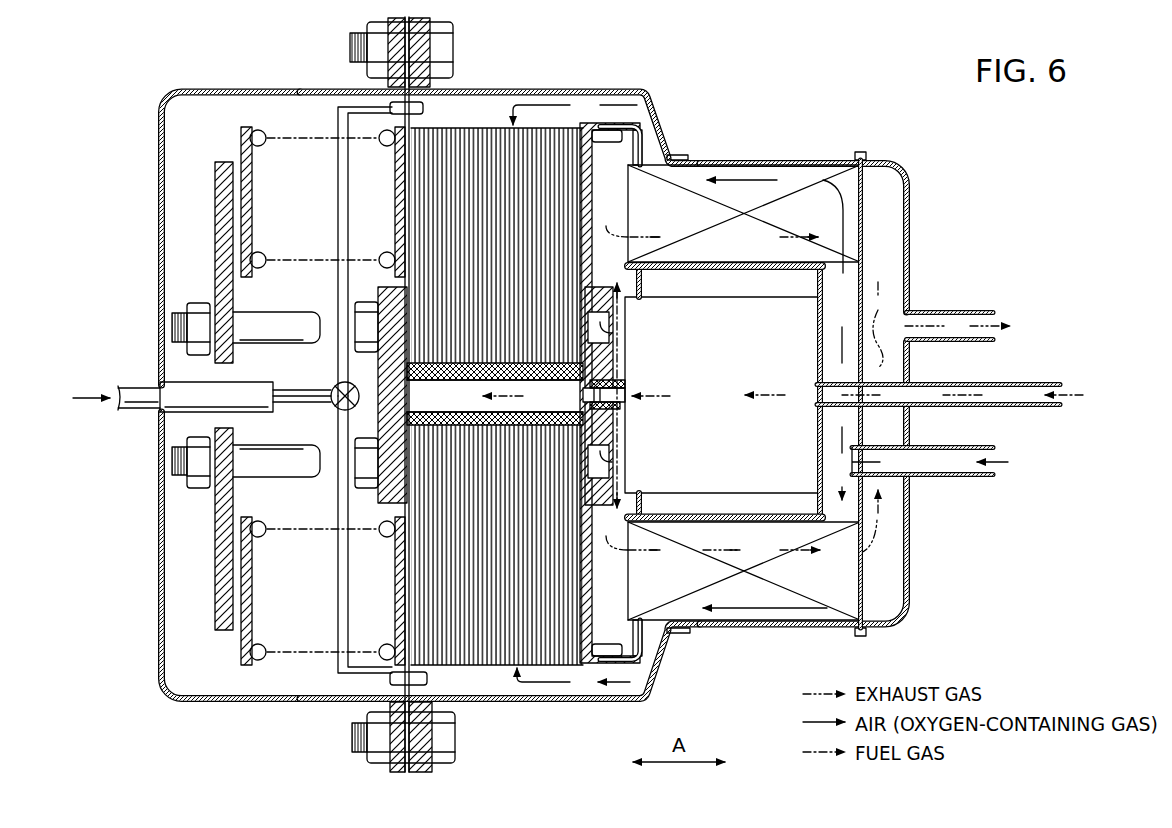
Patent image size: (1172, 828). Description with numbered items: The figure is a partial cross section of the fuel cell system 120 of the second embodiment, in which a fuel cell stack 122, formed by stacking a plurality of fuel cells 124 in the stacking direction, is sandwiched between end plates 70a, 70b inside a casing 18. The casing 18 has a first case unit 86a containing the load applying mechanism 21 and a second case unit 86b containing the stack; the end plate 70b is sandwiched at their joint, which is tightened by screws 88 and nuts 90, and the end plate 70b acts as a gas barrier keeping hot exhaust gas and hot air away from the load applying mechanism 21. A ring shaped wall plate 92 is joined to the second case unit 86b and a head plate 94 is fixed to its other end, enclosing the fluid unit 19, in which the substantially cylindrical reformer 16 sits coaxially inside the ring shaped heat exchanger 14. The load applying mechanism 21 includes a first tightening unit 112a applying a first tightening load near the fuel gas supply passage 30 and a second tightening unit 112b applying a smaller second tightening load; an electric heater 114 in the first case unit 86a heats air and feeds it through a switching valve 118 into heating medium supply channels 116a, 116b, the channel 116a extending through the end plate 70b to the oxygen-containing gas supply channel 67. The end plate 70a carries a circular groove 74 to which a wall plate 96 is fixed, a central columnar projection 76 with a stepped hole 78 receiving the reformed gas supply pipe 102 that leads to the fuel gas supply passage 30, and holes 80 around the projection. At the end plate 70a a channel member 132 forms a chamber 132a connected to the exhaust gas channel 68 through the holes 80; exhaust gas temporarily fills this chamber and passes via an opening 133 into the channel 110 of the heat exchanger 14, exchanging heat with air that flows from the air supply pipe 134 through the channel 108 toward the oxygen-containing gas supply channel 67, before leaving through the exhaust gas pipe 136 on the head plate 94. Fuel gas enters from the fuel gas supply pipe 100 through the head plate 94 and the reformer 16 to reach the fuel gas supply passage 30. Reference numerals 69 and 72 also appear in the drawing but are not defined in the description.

The fuel cell system 120 is at (1001, 130).
The first case unit 86a is at (243, 89).
The second case unit 86b is at (524, 88).
The casing 18 is at (688, 142).
The wall plate 92 is at (732, 630).
The screws 88 is at (435, 43).
The nuts 90 is at (368, 49).
The end plate 70b is at (394, 230).
The heating medium supply channel 116a is at (338, 200).
The heating medium supply channel 116b is at (338, 623).
The load applying mechanism 21 is at (96, 578).
The second tightening unit 112b is at (212, 565).
The first tightening unit 112a is at (377, 505).
The electric heater 114 is at (252, 398).
The switching valve 118 is at (334, 385).
The fuel gas supply passage 30 is at (379, 422).
The fuel cells 124 is at (460, 128).
The fuel gas supply passage 69 is at (413, 405).
The end plate 70a is at (588, 198).
The wall plate 96 is at (650, 140).
The lower partition wall 72 is at (660, 688).
The channel member 132 is at (640, 120).
The chamber 132a is at (670, 656).
The exhaust gas channel 68 is at (550, 331).
The holes 80 is at (600, 463).
The reformed gas supply pipe 102 is at (628, 392).
The columnar projection 76 is at (614, 409).
The stepped hole 78 is at (618, 420).
The fluid unit 19 is at (733, 189).
The reformer 16 is at (748, 305).
The heat exchanger 14 is at (845, 187).
The channel 110 is at (700, 562).
The channel 108 is at (843, 596).
The opening 133 is at (625, 598).
The head plate 94 is at (911, 550).
The exhaust gas pipe 136 is at (953, 311).
The fuel gas supply pipe 100 is at (1030, 382).
The air supply pipe 134 is at (962, 480).
The fuel cell stack 122 is at (545, 113).
The circular groove 74 is at (630, 700).
The oxygen-containing gas supply channel 67 is at (557, 672).